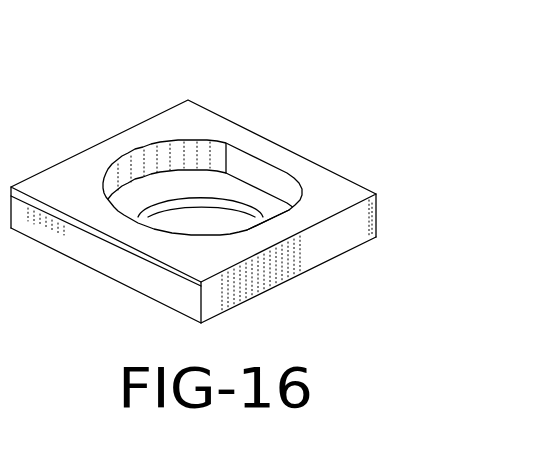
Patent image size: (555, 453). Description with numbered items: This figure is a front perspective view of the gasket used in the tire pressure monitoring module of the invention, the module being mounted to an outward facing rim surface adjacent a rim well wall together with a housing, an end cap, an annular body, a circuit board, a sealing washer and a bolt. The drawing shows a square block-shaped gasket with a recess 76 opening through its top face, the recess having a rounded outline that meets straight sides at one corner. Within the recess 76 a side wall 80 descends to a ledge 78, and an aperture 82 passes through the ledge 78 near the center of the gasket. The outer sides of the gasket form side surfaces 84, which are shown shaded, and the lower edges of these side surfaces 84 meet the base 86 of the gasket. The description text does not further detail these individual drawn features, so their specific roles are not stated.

The recess 76 is at (204, 141).
The ledge 78 is at (268, 205).
The recess side wall 80 is at (251, 165).
The aperture 82 is at (170, 203).
The side surface 84 is at (76, 240).
The base 86 is at (257, 297).